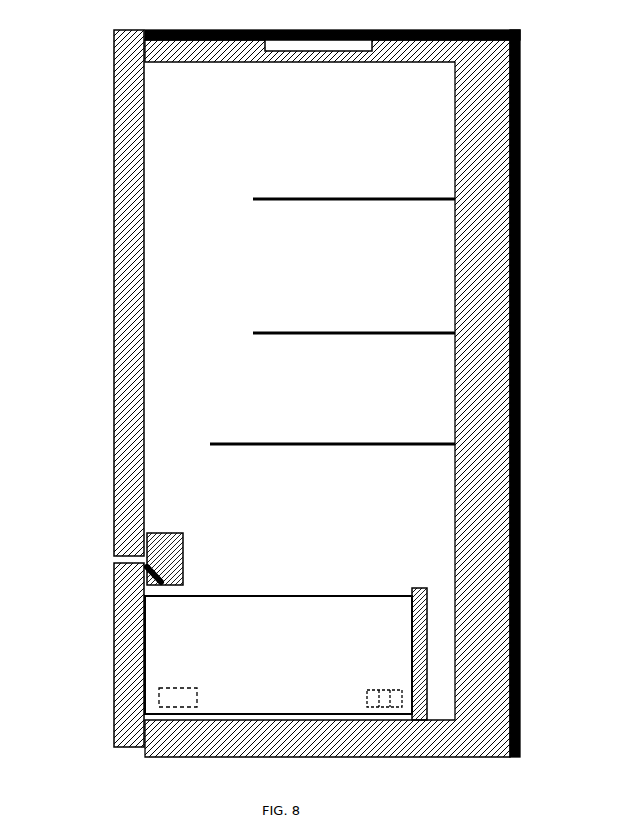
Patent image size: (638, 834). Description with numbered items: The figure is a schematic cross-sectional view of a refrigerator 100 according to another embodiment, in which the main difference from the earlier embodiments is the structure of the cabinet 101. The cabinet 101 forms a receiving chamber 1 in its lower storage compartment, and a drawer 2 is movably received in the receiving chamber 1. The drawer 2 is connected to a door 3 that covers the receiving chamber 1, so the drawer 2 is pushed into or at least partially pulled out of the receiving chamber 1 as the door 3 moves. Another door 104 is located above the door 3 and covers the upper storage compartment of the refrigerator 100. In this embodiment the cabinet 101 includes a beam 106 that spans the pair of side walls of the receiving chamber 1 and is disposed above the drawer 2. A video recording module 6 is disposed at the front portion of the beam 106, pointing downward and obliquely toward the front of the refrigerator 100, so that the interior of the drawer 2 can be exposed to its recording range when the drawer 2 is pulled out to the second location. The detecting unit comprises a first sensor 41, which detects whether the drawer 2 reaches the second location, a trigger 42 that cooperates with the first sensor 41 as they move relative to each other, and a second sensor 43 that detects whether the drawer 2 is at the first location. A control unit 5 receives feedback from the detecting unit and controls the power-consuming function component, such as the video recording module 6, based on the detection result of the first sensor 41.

The refrigerator 100 is at (100, 123).
The cabinet 101 is at (490, 238).
The door 104 is at (118, 378).
The door 3 is at (122, 633).
The control unit 5 is at (322, 47).
The beam 106 is at (178, 533).
The video recording module 6 is at (183, 565).
The drawer 2 is at (283, 596).
The receiving chamber 1 is at (442, 610).
The first sensor 41 is at (197, 690).
The trigger 42 is at (383, 692).
The second sensor 43 is at (367, 694).